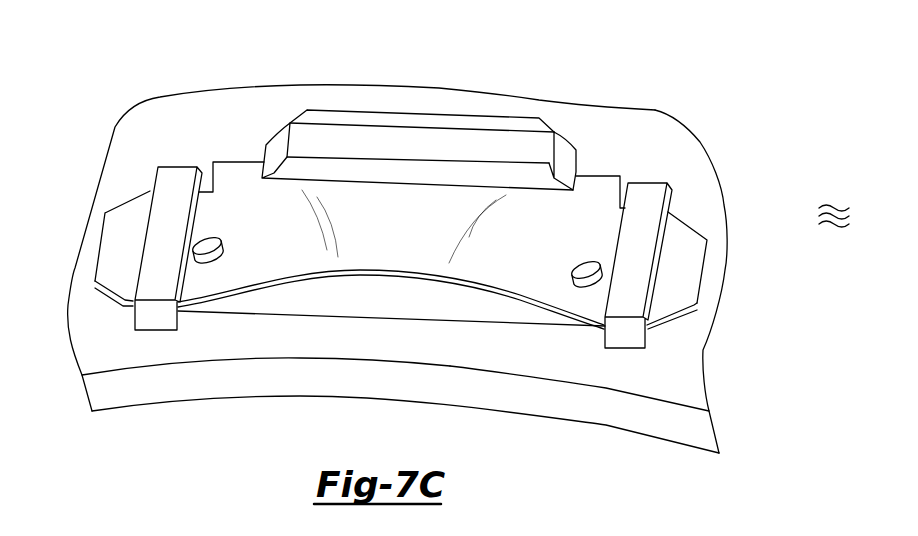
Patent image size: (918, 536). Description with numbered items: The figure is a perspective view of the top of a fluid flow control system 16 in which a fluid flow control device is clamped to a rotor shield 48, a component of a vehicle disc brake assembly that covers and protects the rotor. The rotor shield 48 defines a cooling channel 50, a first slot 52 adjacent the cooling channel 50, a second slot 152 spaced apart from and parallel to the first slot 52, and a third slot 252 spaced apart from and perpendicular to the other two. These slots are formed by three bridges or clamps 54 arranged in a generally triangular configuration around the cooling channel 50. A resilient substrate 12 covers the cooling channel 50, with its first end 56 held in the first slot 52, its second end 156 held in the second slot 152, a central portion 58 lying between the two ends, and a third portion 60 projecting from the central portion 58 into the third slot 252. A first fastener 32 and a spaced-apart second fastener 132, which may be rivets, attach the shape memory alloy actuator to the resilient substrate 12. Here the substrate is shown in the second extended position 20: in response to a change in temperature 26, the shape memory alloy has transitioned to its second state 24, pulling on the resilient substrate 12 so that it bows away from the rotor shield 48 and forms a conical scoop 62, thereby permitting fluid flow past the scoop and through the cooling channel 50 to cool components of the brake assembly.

The fluid flow control system 16 is at (102, 105).
The rotor shield 48 is at (679, 147).
The second state 24 is at (498, 385).
The second extended position 20 is at (536, 416).
The conical scoop 62 is at (564, 356).
The second end 156 is at (122, 233).
The second slot 152 is at (125, 281).
The bridges or clamps 54 is at (175, 182).
The third portion 60 is at (358, 118).
The third slot 252 is at (556, 127).
The resilient substrate 12 is at (580, 207).
The first slot 52 is at (662, 266).
The first end 56 is at (673, 297).
The central portion 58 is at (352, 250).
The cooling channel 50 is at (348, 295).
The second fastener 132 is at (207, 240).
The first fastener 32 is at (587, 261).
The change in temperature 26 is at (839, 203).